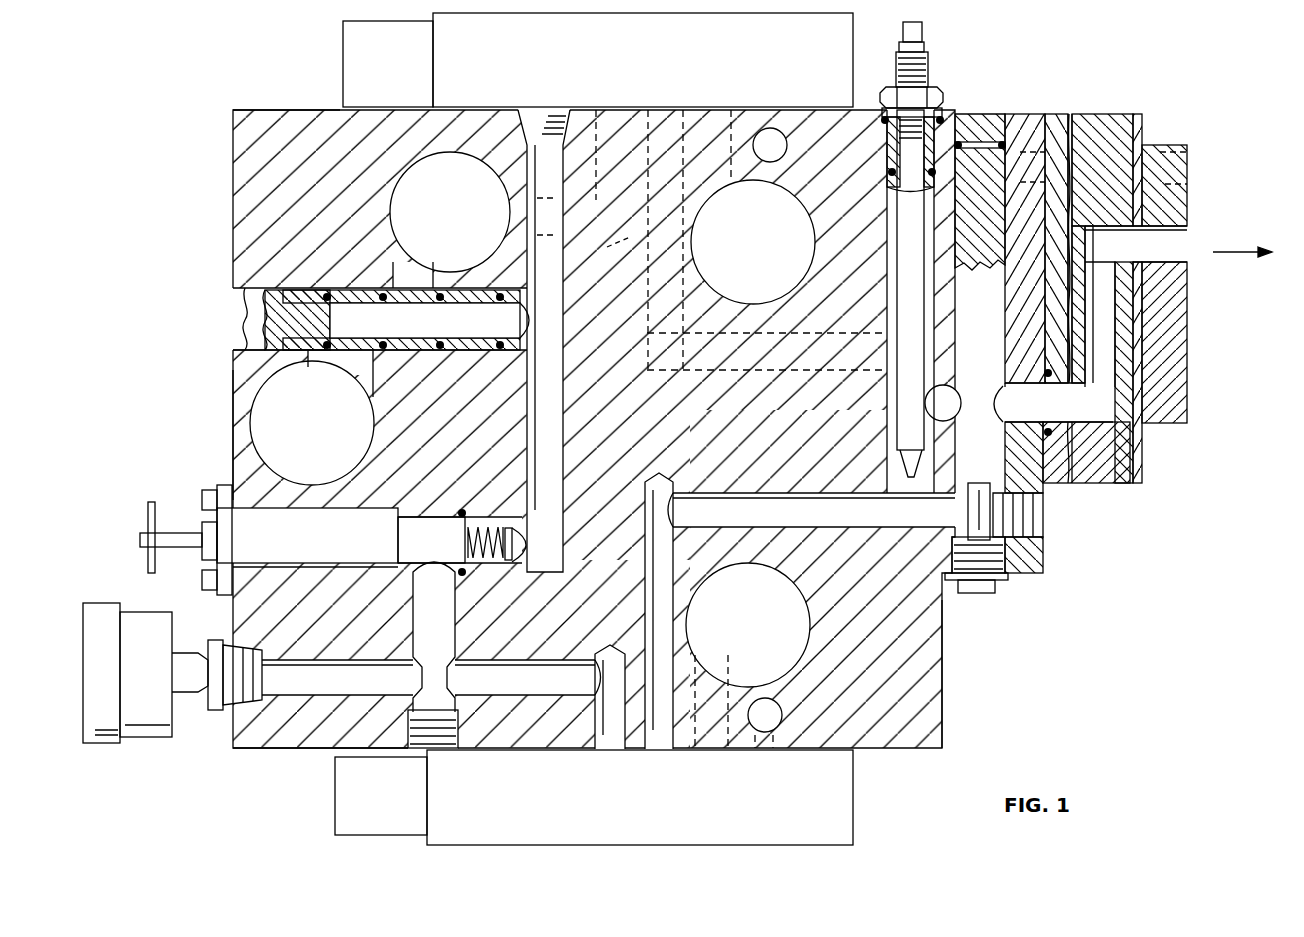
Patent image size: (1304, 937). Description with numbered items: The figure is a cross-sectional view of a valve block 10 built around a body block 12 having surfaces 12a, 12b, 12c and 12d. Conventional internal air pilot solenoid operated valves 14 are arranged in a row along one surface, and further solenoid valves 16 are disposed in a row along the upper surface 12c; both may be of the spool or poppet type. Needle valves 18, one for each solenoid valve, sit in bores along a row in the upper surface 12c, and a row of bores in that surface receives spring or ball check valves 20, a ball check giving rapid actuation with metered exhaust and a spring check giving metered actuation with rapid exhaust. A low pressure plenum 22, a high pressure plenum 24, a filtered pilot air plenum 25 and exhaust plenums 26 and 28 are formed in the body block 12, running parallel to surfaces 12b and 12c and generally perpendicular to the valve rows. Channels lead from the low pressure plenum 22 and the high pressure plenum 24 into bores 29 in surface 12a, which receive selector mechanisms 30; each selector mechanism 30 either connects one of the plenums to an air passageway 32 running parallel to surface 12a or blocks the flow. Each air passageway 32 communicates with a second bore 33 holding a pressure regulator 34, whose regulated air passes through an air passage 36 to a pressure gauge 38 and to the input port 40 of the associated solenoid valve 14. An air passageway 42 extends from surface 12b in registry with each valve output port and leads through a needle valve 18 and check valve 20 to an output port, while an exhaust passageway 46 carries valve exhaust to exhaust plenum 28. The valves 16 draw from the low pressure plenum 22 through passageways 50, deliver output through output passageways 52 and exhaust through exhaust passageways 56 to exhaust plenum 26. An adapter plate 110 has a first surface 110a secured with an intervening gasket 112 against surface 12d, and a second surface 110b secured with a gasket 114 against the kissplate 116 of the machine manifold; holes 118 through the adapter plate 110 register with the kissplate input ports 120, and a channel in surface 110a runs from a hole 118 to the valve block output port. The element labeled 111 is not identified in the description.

The valve block 10 is at (1052, 566).
The body block 12 is at (262, 212).
The surface of body block 12a is at (233, 403).
The surface of body block 12b is at (306, 750).
The upper surface of body block 12c is at (310, 110).
The surface of body block 12d is at (943, 684).
The internal air pilot solenoid operated valve 14 is at (830, 850).
The internal air pilot solenoid operated valve 16 is at (598, 60).
The needle valve 18 is at (928, 68).
The spring or ball check valve 20 is at (968, 118).
The low pressure plenum 22 is at (463, 225).
The high pressure plenum 24 is at (312, 417).
The filtered pilot air plenum 25 is at (778, 128).
The exhaust plenum 26 is at (766, 255).
The exhaust plenum 28 is at (761, 638).
The bore 29 is at (247, 368).
The selector mechanism 30 is at (355, 320).
The air passageway 32 is at (537, 443).
The second bore 33 is at (250, 505).
The pressure regulator 34 is at (316, 547).
The air passage 36 is at (446, 628).
The pressure gauge 38 is at (151, 677).
The input port 40 is at (612, 749).
The air passageway 42 is at (668, 749).
The exhaust passageway 46 is at (712, 749).
The passageway 50 is at (597, 239).
The output passageway 52 is at (652, 110).
The exhaust passageway 56 is at (703, 153).
The adapter plate 110 is at (1130, 462).
The first surface of adapter plate 110a is at (1097, 104).
The second surface of adapter plate 110b is at (1135, 142).
The fitting block 111 is at (1030, 120).
The gasket 112 is at (1080, 484).
The gasket 114 is at (1145, 410).
The kissplate 116 is at (1182, 345).
The hole 118 is at (1136, 306).
The kissplate input port 120 is at (1188, 262).